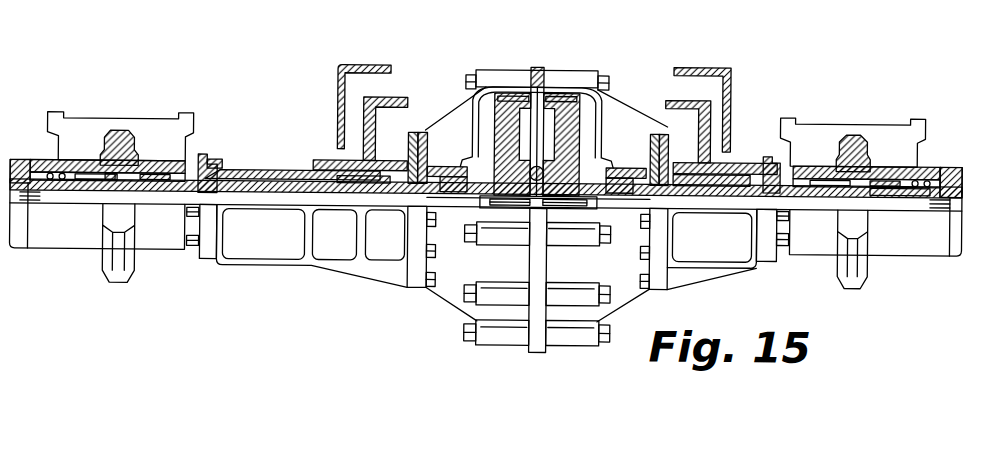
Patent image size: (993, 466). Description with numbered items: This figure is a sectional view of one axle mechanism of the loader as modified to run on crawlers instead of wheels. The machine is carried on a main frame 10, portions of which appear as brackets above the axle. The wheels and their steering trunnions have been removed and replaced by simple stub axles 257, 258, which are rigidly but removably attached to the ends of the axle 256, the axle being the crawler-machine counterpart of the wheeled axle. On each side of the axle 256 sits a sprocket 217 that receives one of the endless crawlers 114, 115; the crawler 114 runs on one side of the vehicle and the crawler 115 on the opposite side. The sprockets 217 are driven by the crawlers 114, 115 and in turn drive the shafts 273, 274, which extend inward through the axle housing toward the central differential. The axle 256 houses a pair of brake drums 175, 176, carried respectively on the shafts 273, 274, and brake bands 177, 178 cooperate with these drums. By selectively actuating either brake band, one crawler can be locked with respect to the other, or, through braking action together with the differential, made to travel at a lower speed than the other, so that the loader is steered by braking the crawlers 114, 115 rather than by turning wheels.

The main frame 10 is at (340, 65).
The endless crawler 114 is at (88, 130).
The endless crawler 115 is at (823, 127).
The brake drum 175 is at (570, 127).
The brake drum 176 is at (505, 128).
The brake band 177 is at (563, 87).
The brake band 178 is at (512, 92).
The sprocket 217 is at (118, 133).
The axle 256 is at (278, 167).
The stub axle 257 is at (145, 186).
The stub axle 258 is at (875, 190).
The shaft 273 is at (707, 200).
The shaft 274 is at (250, 202).